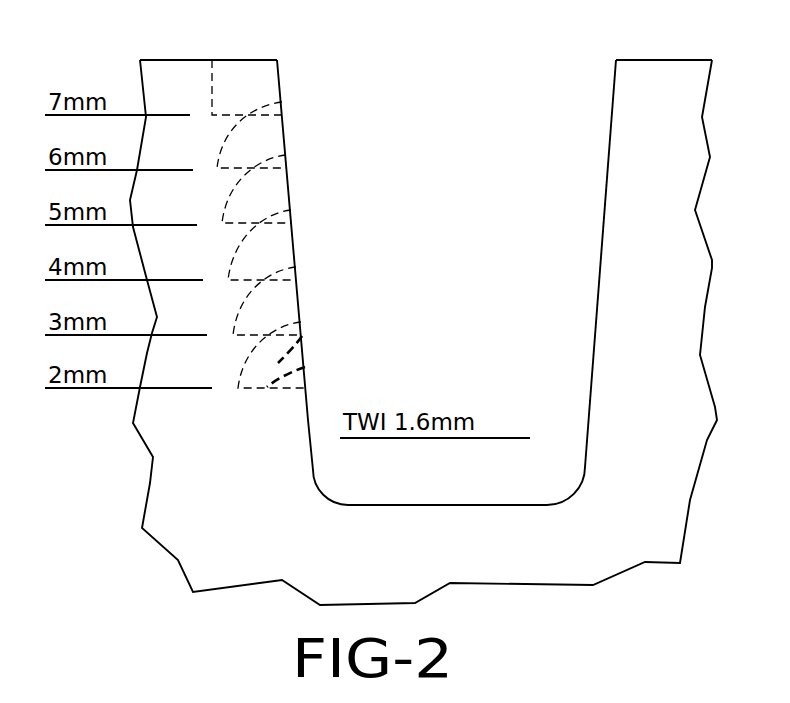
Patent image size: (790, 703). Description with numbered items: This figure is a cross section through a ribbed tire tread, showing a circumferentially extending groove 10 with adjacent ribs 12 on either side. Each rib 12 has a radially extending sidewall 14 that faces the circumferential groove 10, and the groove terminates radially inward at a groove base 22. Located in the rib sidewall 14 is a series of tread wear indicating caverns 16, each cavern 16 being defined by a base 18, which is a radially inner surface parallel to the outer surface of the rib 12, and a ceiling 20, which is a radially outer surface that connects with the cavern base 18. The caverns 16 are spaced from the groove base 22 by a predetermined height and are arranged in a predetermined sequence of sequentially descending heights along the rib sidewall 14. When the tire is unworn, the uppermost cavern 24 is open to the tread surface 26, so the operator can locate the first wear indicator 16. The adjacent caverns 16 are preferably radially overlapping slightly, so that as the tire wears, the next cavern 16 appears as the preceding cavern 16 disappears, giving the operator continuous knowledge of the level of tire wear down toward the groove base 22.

The circumferential groove 10 is at (432, 267).
The rib 12 is at (655, 188).
The rib sidewall 14 is at (309, 419).
The tread wear indicating cavern 16 is at (270, 135).
The cavern base 18 is at (305, 367).
The cavern ceiling 20 is at (302, 336).
The groove base 22 is at (387, 503).
The uppermost cavern 24 is at (248, 88).
The tread surface 26 is at (186, 60).